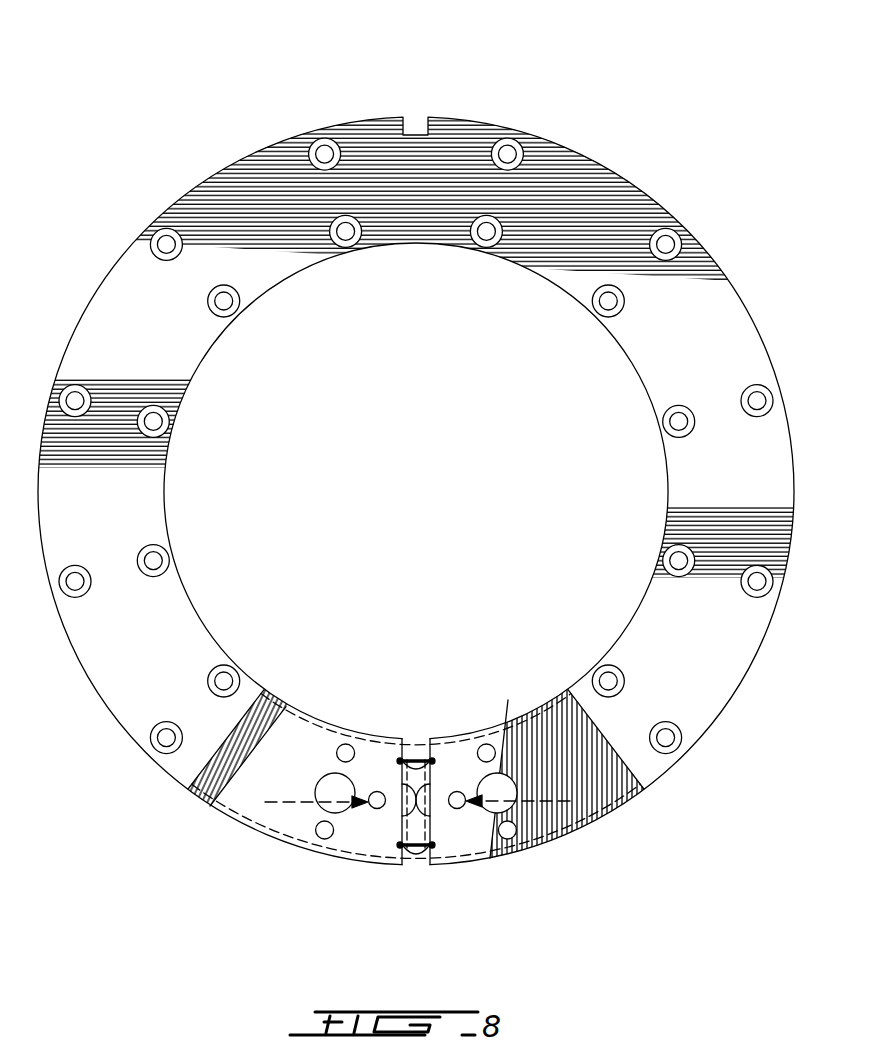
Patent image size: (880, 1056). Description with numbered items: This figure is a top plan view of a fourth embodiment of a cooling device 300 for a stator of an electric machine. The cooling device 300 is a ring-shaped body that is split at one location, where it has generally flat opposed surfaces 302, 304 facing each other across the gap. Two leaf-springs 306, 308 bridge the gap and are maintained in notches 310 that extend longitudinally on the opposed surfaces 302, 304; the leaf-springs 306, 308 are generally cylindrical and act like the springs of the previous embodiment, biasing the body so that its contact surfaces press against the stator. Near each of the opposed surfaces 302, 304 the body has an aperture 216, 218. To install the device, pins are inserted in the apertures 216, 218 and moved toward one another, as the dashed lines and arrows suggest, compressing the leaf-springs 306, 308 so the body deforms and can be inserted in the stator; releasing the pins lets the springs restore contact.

The cooling device 300 is at (92, 165).
The aperture 216 is at (400, 782).
The aperture 218 is at (468, 788).
The opposed surface 302 is at (372, 792).
The opposed surface 304 is at (436, 780).
The leaf-spring 306 is at (420, 758).
The leaf-spring 308 is at (424, 851).
The notch 310 is at (402, 851).